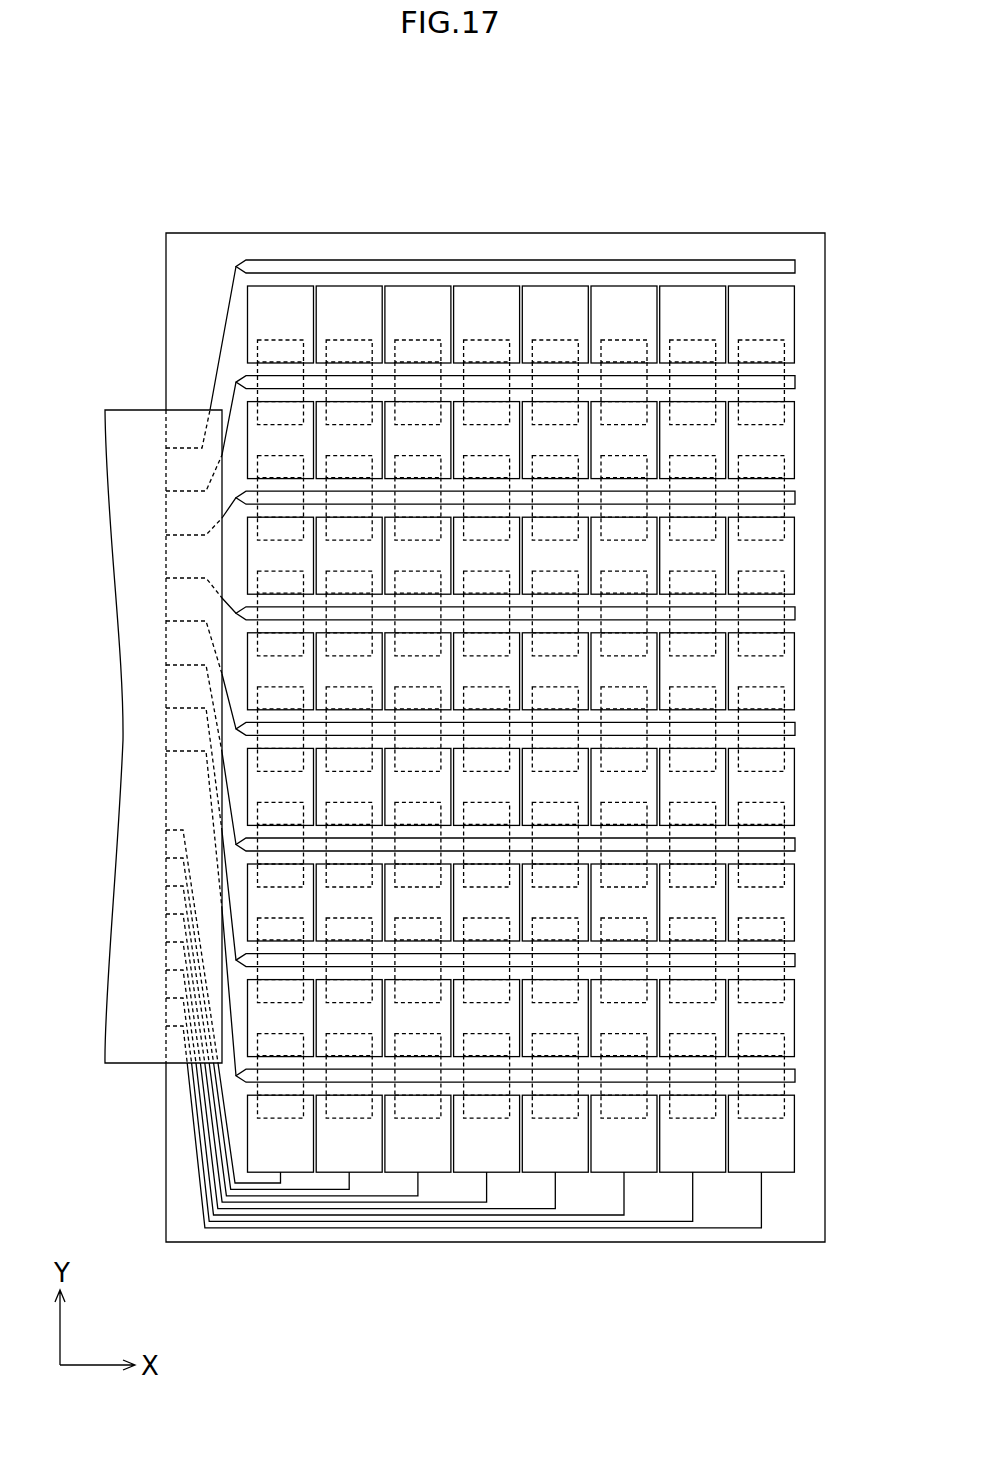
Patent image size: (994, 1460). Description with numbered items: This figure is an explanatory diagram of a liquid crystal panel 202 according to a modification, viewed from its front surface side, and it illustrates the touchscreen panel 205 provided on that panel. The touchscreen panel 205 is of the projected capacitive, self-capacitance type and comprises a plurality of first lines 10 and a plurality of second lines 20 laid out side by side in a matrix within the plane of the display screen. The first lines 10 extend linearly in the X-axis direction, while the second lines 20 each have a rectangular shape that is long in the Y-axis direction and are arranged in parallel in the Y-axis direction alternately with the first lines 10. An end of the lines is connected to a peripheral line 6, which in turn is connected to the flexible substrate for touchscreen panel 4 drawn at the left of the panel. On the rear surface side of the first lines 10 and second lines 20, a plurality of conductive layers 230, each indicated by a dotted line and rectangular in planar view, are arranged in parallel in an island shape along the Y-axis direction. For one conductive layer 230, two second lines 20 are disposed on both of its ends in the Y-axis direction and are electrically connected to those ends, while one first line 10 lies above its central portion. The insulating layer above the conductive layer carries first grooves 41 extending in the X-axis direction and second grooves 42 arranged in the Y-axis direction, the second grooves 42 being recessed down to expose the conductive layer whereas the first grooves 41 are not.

The liquid crystal panel 202 is at (534, 150).
The touchscreen panel 205 is at (800, 239).
The flexible substrate for touchscreen panel 4 is at (135, 425).
The peripheral line 6 is at (224, 333).
The first lines 10 is at (795, 962).
The second lines 20 is at (793, 1125).
The first grooves 41 is at (385, 380).
The second grooves 42 is at (248, 440).
The conductive layers 230 is at (758, 1118).